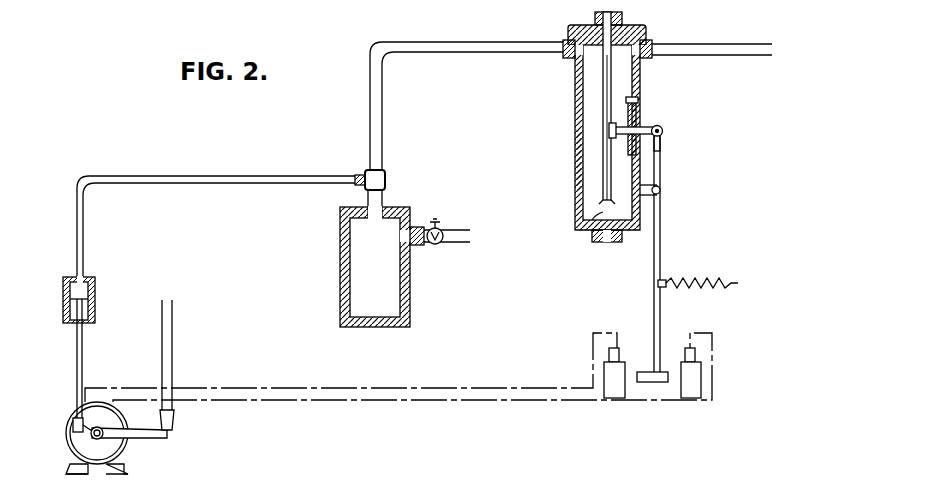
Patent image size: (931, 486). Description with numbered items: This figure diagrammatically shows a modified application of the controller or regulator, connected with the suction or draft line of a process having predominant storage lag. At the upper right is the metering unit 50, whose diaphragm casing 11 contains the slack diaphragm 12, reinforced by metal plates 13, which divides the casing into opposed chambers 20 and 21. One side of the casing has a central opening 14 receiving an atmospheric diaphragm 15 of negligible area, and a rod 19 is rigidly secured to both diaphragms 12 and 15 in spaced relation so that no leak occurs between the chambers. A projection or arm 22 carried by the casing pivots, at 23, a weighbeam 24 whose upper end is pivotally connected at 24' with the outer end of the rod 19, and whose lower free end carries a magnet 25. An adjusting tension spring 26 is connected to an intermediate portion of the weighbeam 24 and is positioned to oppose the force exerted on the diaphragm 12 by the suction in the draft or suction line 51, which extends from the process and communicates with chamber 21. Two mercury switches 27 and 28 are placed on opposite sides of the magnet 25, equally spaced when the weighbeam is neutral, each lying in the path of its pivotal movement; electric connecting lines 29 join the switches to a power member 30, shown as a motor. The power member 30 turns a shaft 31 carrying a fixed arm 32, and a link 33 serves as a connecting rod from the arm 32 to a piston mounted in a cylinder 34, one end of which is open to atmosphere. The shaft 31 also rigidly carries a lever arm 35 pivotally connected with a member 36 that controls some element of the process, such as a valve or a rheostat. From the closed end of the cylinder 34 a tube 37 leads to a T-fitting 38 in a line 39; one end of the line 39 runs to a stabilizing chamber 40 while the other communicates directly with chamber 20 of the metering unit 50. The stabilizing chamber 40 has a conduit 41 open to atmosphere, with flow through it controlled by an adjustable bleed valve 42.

The diaphragm casing 11 is at (578, 192).
The slack diaphragm 12 is at (592, 230).
The metal plates 13 is at (612, 80).
The opening 14 is at (636, 113).
The atmospheric diaphragm 15 is at (660, 129).
The rod 19 is at (663, 133).
The chamber 20 is at (585, 163).
The chamber 21 is at (623, 214).
The arm 22 is at (650, 197).
The pivot 23 is at (661, 190).
The weighbeam 24 is at (688, 254).
The pivotal connection 24' is at (678, 151).
The magnet 25 is at (648, 383).
The adjusting spring 26 is at (705, 280).
The mercury switch 27 is at (607, 375).
The mercury switch 28 is at (703, 380).
The electric connecting lines 29 is at (377, 402).
The power member 30 is at (118, 452).
The shaft 31 is at (78, 450).
The arm 32 is at (66, 436).
The link 33 is at (88, 295).
The cylinder 34 is at (90, 313).
The lever arm 35 is at (145, 437).
The controller 36 is at (172, 358).
The tube 37 is at (177, 182).
The T-fitting 38 is at (386, 180).
The line 39 is at (455, 48).
The stabilizing chamber 40 is at (359, 266).
The conduit 41 is at (455, 242).
The bleed valve 42 is at (437, 224).
The metering unit 50 is at (574, 101).
The draft or suction line 51 is at (724, 47).